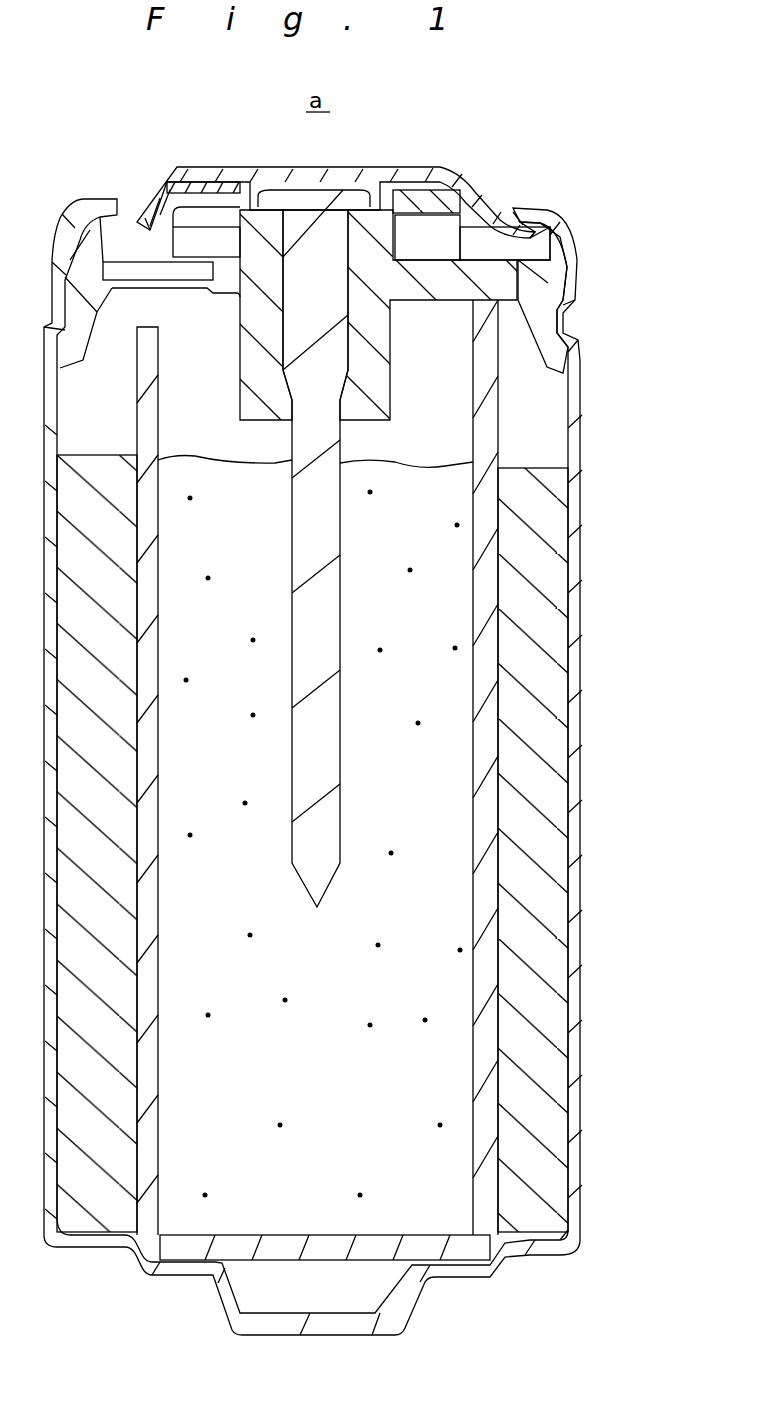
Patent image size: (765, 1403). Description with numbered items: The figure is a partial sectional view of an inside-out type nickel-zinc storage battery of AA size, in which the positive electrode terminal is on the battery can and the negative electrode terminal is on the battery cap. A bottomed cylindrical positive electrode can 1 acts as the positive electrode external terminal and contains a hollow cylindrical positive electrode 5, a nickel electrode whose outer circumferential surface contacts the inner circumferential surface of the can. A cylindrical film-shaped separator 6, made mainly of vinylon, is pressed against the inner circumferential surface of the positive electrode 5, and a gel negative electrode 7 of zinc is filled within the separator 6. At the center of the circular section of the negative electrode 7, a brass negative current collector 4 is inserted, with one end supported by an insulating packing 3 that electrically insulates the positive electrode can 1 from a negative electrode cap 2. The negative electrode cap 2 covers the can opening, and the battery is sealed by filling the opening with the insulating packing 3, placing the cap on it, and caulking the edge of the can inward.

The positive electrode can 1 is at (578, 392).
The negative electrode cap 2 is at (447, 165).
The insulating packing 3 is at (548, 282).
The negative current collector 4 is at (318, 707).
The positive electrode 5 is at (535, 510).
The separator 6 is at (477, 592).
The gel negative electrode 7 is at (427, 810).